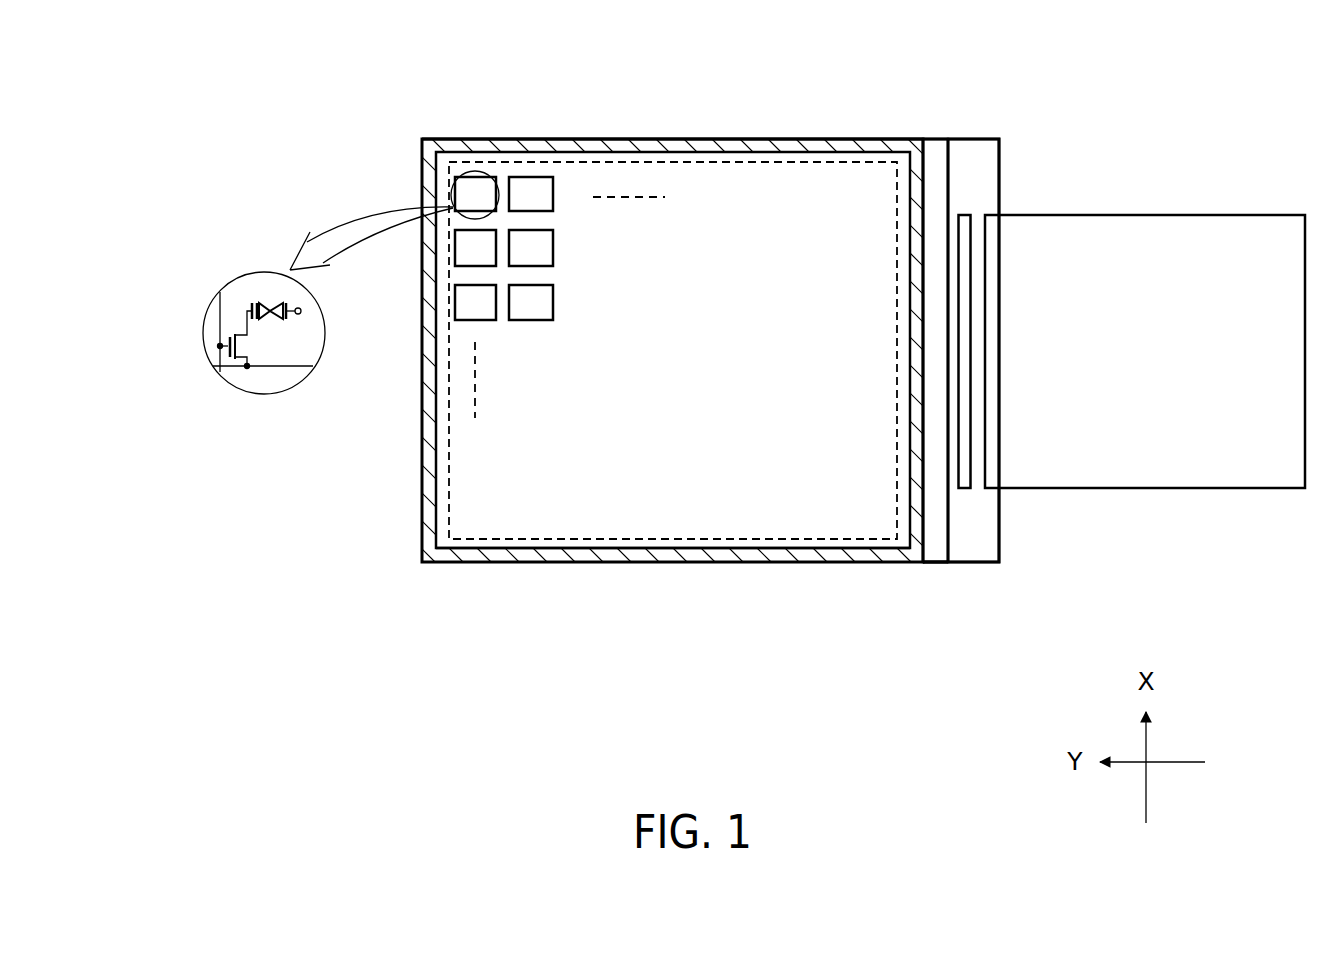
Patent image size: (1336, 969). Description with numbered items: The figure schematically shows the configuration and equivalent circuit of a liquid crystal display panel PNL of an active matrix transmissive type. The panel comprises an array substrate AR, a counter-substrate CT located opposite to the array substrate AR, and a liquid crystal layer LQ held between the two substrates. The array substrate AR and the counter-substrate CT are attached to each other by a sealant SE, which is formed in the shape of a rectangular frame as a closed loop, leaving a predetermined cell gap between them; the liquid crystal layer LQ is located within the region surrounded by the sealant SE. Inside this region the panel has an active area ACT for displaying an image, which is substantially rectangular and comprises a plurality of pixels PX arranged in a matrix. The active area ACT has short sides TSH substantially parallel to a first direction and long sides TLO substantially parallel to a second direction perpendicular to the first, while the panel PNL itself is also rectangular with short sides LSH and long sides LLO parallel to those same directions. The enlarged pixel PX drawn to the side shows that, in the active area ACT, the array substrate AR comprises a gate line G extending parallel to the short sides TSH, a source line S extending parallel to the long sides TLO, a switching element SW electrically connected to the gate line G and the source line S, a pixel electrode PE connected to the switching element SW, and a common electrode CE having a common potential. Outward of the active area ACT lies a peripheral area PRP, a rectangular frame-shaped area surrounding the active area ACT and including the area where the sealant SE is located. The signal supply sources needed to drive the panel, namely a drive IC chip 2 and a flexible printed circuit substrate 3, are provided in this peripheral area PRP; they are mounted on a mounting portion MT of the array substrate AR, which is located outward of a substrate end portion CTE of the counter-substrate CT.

The pixel PX is at (476, 176).
The sealant SE is at (733, 138).
The peripheral area PRP is at (935, 143).
The substrate end portion CTE is at (960, 154).
The drive IC chip 2 is at (965, 213).
The flexible printed circuit substrate 3 is at (1160, 215).
The mounting portion MT is at (981, 498).
The array substrate AR is at (988, 547).
The counter-substrate CT is at (937, 557).
The liquid crystal display panel PNL is at (972, 574).
The short side TSH is at (893, 492).
The long side TLO is at (807, 548).
The active area ACT is at (748, 546).
The long side LLO is at (507, 562).
The short side LSH is at (422, 500).
The pixel electrode PE is at (250, 303).
The liquid crystal layer LQ is at (273, 300).
The gate line G is at (220, 315).
The common electrode CE is at (302, 312).
The switching element SW is at (258, 343).
The source line S is at (278, 367).